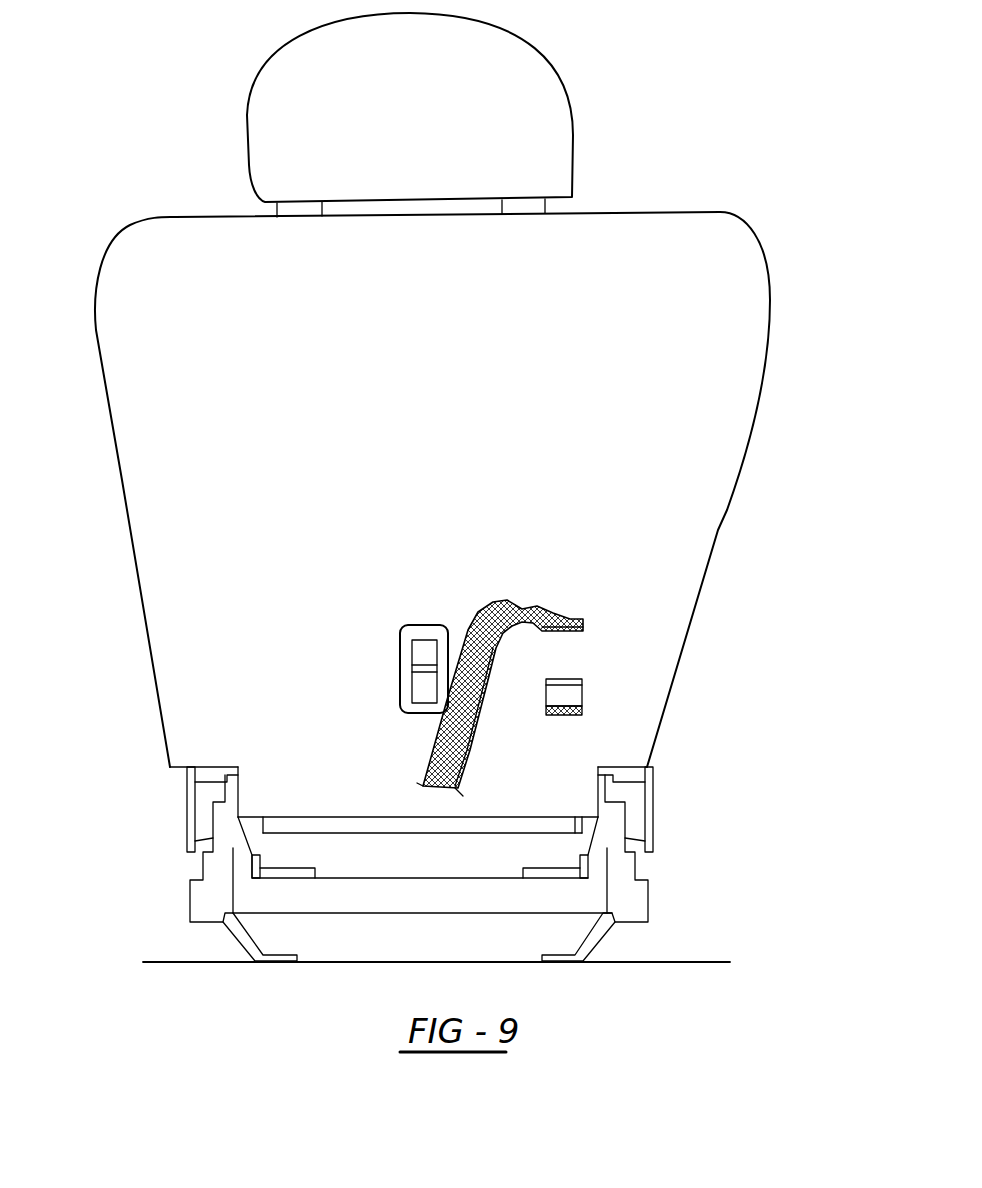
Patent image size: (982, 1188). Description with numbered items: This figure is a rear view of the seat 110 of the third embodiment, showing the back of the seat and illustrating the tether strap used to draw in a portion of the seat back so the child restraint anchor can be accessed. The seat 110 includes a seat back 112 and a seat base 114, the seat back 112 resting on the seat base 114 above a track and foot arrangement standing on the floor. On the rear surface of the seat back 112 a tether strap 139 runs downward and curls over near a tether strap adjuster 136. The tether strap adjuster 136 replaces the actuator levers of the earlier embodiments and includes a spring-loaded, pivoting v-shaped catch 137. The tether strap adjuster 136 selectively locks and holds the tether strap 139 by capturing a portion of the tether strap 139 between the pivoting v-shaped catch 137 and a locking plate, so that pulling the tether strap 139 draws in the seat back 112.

The seat 110 is at (687, 137).
The seat back 112 is at (693, 373).
The seat base 114 is at (203, 900).
The tether strap adjuster 136 is at (563, 695).
The pivoting v-shaped catch 137 is at (567, 715).
The tether strap 139 is at (497, 617).